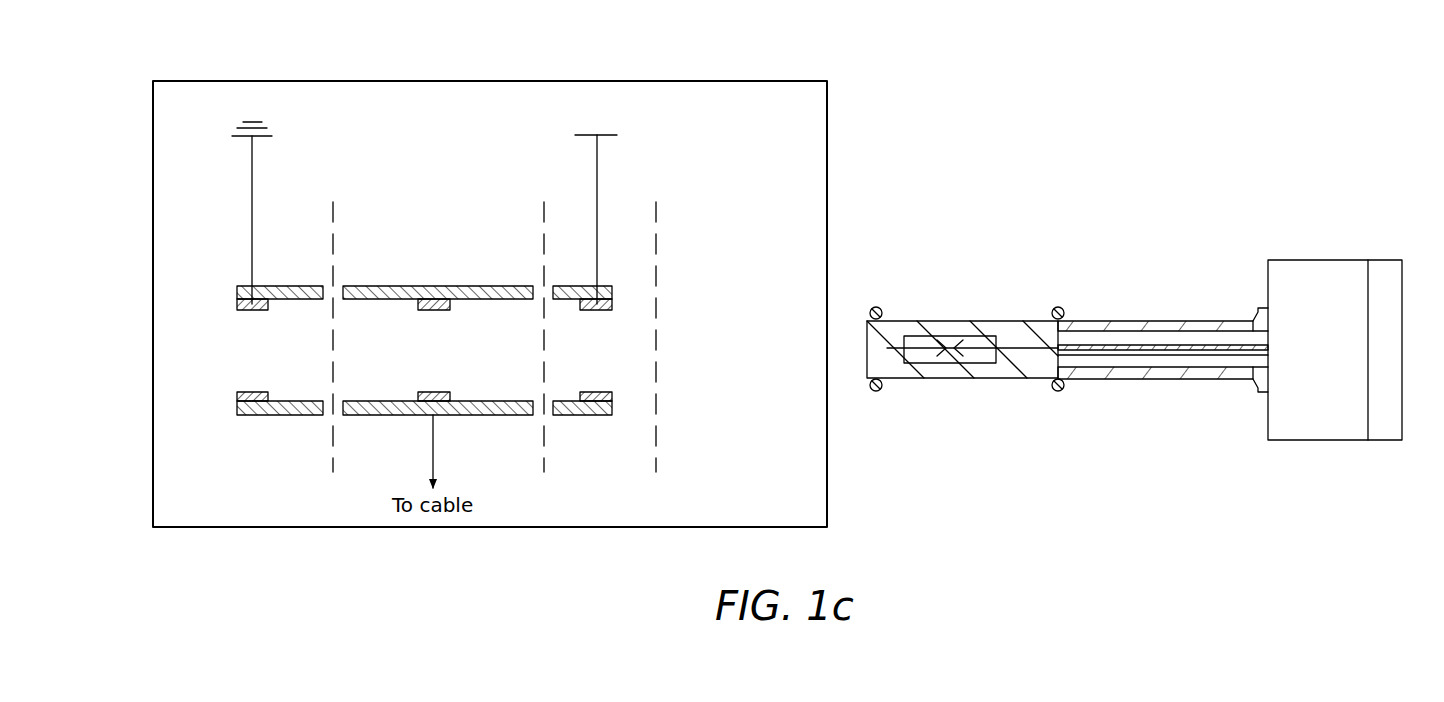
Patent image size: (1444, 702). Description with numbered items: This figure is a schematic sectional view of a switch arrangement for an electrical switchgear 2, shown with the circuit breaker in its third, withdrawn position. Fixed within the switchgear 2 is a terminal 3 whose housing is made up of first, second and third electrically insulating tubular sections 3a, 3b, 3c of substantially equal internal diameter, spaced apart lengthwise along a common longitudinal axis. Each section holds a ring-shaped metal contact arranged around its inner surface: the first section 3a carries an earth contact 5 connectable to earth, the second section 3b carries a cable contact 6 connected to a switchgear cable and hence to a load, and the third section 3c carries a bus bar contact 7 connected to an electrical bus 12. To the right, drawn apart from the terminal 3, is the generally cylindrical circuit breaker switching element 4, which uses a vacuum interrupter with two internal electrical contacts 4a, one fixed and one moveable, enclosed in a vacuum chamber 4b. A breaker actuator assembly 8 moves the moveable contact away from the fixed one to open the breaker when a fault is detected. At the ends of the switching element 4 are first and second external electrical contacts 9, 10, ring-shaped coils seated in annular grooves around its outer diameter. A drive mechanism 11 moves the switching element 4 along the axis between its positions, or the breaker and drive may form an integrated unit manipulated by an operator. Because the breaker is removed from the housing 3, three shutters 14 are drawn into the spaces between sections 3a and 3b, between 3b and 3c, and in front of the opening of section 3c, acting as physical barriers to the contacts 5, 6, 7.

The electrical switchgear 2 is at (183, 81).
The terminal 3 is at (443, 374).
The first insulating tubular section 3a is at (280, 286).
The second insulating tubular section 3b is at (484, 286).
The third insulating tubular section 3c is at (606, 286).
The circuit breaker switching element 4 is at (988, 379).
The internal electrical contacts 4a is at (950, 356).
The vacuum chamber 4b is at (920, 336).
The earth contact 5 is at (240, 304).
The cable contact 6 is at (434, 286).
The bus bar contact 7 is at (612, 306).
The breaker actuator assembly 8 is at (1315, 260).
The first external electrical contact 9 is at (883, 309).
The second external electrical contact 10 is at (1065, 309).
The powered drive mechanism 11 is at (1385, 260).
The electrical bus 12 is at (580, 135).
The shutters 14 is at (333, 210).